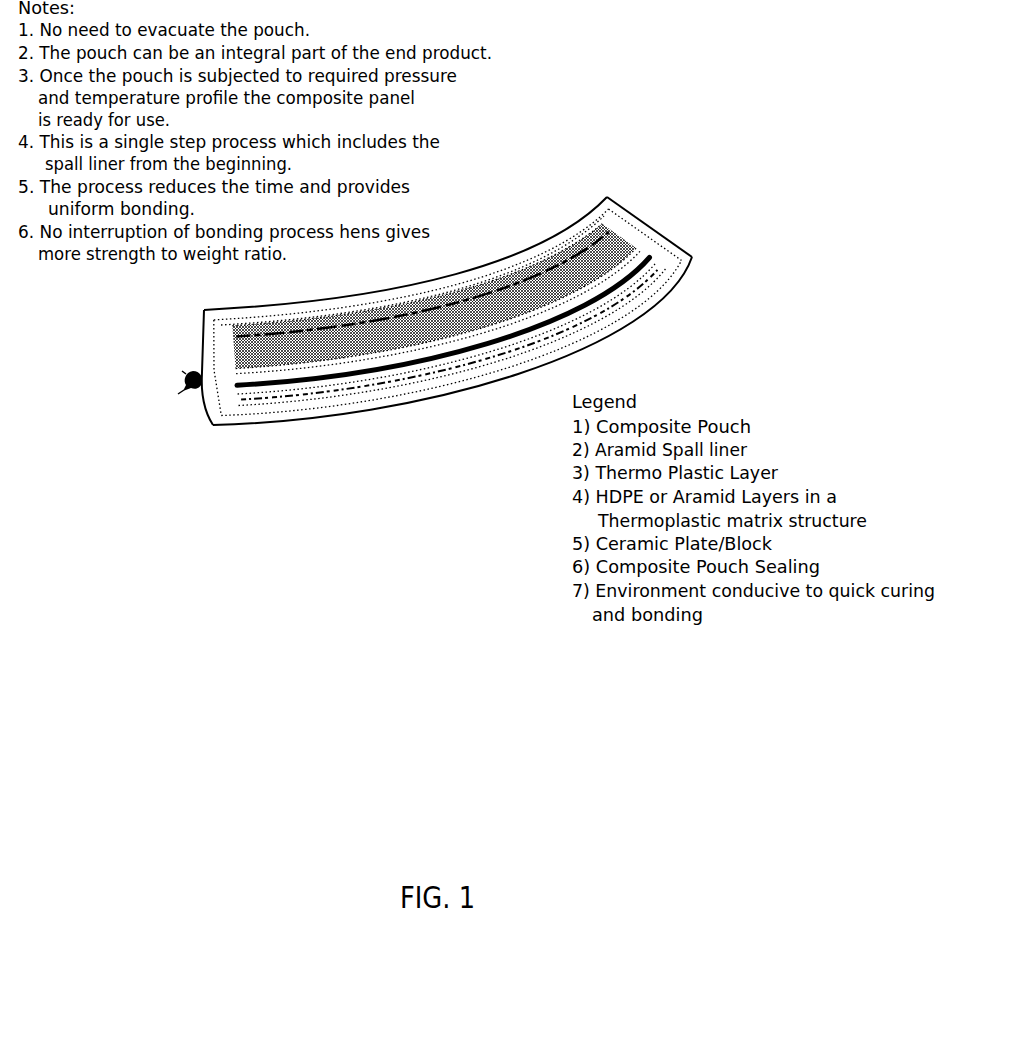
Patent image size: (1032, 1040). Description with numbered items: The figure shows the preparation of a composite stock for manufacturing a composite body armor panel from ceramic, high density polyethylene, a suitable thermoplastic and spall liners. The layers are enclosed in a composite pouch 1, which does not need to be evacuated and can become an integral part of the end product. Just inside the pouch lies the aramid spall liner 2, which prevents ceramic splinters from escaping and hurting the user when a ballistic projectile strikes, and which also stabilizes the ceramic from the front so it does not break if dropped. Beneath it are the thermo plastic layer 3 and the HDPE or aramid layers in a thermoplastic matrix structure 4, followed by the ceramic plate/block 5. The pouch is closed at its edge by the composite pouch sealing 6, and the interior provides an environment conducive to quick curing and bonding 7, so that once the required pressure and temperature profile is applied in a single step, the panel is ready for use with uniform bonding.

The composite pouch 1 is at (237, 304).
The aramid spall liner 2 is at (209, 331).
The thermo plastic layer 3 is at (610, 218).
The HDPE or aramid layers in a thermoplastic matrix structure 4 is at (224, 352).
The ceramic plate/block 5 is at (316, 392).
The composite pouch sealing 6 is at (195, 399).
The environment conducive to quick curing and bonding 7 is at (463, 366).